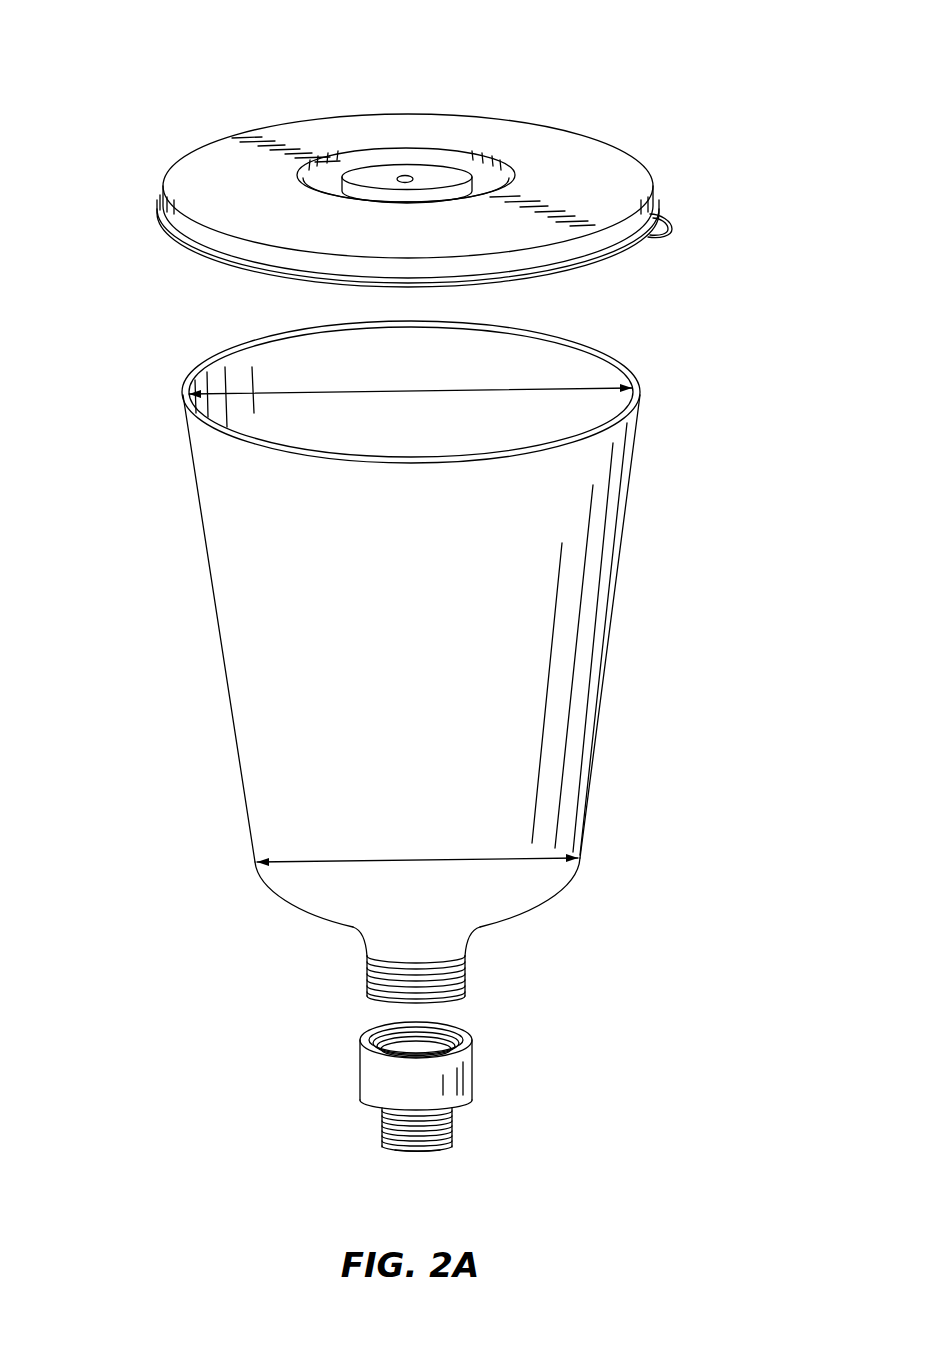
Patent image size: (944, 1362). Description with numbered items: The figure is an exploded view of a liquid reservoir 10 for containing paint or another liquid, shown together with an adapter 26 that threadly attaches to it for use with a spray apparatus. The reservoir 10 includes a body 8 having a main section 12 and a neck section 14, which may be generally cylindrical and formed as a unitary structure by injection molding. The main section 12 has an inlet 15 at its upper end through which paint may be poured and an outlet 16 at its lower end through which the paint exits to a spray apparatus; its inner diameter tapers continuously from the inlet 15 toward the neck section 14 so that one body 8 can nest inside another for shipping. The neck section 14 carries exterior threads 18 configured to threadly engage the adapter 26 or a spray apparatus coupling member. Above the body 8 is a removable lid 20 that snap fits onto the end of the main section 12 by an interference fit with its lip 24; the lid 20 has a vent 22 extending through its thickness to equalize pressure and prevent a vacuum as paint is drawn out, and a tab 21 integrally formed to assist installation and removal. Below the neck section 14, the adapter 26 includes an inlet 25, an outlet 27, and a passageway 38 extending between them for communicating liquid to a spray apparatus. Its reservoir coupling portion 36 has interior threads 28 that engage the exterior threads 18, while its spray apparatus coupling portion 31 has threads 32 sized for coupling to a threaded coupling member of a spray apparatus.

The liquid reservoir 10 is at (686, 59).
The body 8 is at (652, 700).
The main section 12 is at (207, 572).
The neck section 14 is at (323, 962).
The inlet 15 is at (560, 372).
The outlet 16 is at (452, 1001).
The exterior threads 18 is at (367, 975).
The lid 20 is at (202, 177).
The tab 21 is at (670, 228).
The vent 22 is at (405, 177).
The lip 24 is at (182, 393).
The inlet 25 is at (386, 1023).
The adapter 26 is at (337, 1033).
The outlet 27 is at (416, 1163).
The interior threads 28 is at (424, 1044).
The spray apparatus coupling portion 31 is at (468, 1158).
The threads 32 is at (455, 1128).
The reservoir coupling portion 36 is at (492, 1077).
The passageway 38 is at (455, 1017).